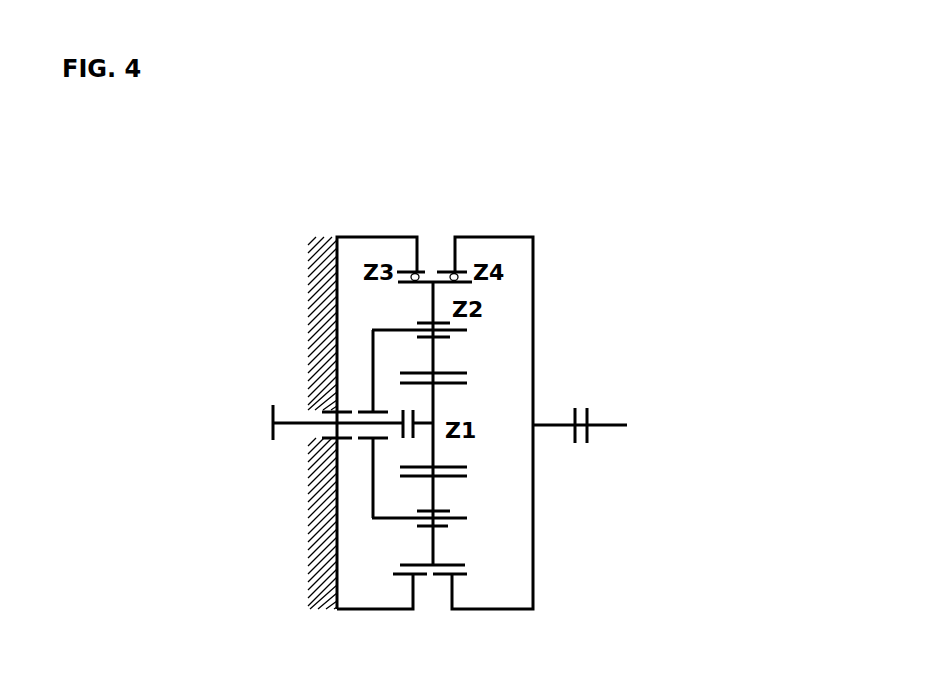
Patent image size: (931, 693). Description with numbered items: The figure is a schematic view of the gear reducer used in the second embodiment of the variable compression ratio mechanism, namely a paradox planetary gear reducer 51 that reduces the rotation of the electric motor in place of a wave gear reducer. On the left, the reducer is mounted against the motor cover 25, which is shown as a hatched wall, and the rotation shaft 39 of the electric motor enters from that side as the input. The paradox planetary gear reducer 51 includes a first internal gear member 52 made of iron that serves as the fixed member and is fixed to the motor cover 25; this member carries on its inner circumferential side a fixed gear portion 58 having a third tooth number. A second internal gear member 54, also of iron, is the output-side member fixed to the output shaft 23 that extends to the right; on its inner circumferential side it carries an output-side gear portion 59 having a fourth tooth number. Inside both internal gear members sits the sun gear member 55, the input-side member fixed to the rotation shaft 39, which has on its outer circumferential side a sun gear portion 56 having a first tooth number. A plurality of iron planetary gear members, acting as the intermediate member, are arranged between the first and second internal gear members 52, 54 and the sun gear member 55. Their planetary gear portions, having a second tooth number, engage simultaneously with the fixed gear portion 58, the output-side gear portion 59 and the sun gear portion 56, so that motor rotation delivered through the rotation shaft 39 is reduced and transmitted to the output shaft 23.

The output shaft 23 is at (605, 423).
The motor cover 25 is at (312, 237).
The rotation shaft 39 is at (293, 423).
The paradox planetary gear reducer 51 is at (508, 220).
The first internal gear member 52 is at (373, 235).
The second internal gear member 54 is at (518, 237).
The sun gear member 55 is at (437, 447).
The sun gear portion 56 is at (467, 474).
The fixed gear portion 58 is at (413, 274).
The output-side gear portion 59 is at (453, 274).